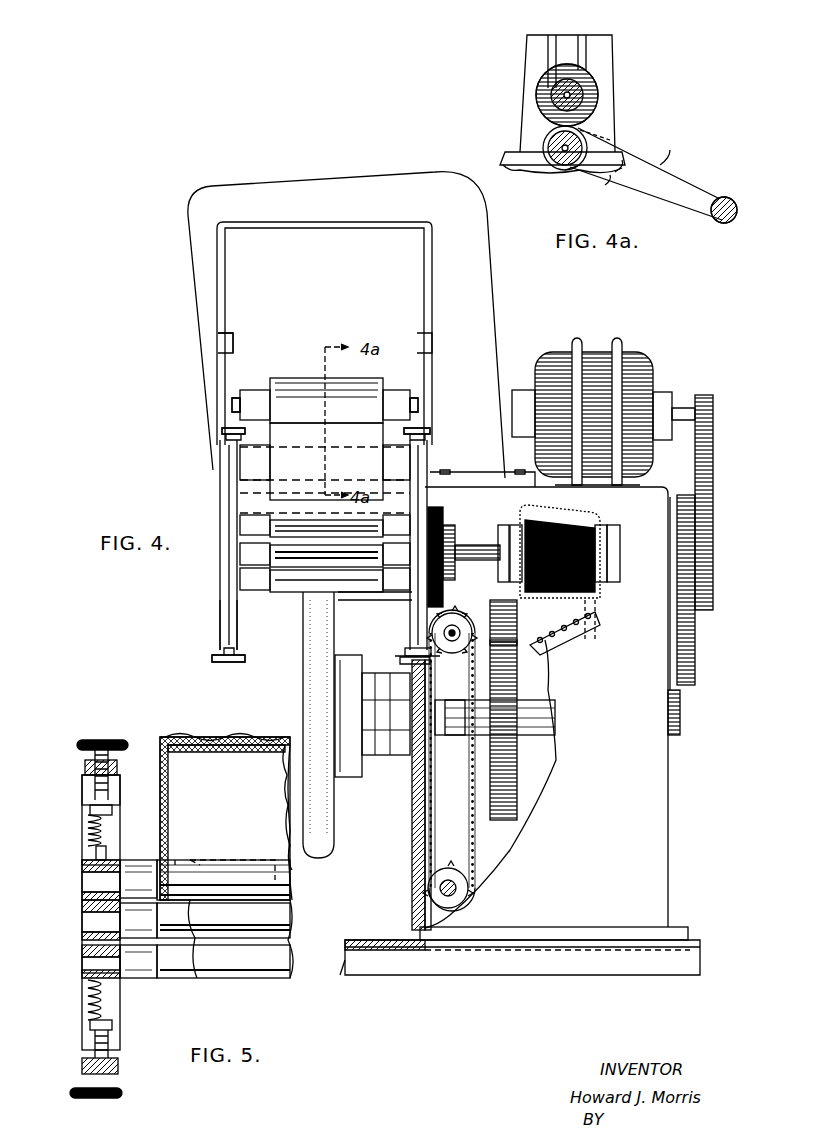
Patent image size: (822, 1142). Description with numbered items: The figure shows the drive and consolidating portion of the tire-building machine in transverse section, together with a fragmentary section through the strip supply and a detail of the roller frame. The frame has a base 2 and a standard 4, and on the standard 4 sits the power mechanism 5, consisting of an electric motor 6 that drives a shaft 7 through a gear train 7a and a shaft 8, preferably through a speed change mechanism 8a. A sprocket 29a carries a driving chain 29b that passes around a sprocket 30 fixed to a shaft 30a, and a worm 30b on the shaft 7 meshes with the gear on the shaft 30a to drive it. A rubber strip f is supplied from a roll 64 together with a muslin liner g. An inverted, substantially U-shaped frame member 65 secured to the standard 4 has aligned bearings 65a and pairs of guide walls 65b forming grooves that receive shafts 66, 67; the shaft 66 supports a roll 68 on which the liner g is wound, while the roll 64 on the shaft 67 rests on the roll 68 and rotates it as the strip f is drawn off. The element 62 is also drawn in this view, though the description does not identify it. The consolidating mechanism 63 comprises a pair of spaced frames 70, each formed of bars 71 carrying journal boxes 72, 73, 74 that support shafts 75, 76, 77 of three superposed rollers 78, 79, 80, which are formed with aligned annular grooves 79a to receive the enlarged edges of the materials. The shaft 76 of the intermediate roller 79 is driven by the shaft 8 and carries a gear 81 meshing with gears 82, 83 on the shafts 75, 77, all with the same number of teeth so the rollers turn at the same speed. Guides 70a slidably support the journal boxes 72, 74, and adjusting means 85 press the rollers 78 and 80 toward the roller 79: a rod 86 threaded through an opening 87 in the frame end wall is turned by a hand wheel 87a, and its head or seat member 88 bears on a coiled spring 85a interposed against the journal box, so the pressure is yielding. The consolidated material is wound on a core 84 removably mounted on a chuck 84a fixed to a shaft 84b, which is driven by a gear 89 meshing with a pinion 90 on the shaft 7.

In FIG. 4, the base 2 is at (467, 975).
In FIG. 4, the standard 4 is at (655, 820).
In FIG. 4, the power mechanism 5 is at (670, 572).
In FIG. 4, the electric motor 6 is at (600, 352).
In FIG. 4, the shaft 7 is at (518, 650).
In FIG. 4, the gear train 7a is at (699, 565).
In FIG. 4, the shaft 8 is at (465, 548).
In FIG. 4, the speed change mechanism 8a is at (470, 892).
In FIG. 4, the sprocket 29a is at (428, 882).
In FIG. 4, the driving chain 29b is at (412, 858).
In FIG. 4, the sprocket 30 is at (455, 650).
In FIG. 4, the shaft 30a is at (418, 640).
In FIG. 4, the worm 30b is at (455, 612).
In FIG. 4, the frame 62 is at (324, 333).
In FIG. 4A, the frame 62 is at (581, 136).
In FIG. 4A, the consolidating mechanism 63 is at (740, 200).
In FIG. 4, the roll 64 is at (400, 395).
In FIG. 4A, the roll 64 is at (585, 90).
In FIG. 4, the frame member 65 is at (490, 296).
In FIG. 4A, the frame member 65 is at (530, 62).
In FIG. 4A, the bearings 65a is at (620, 138).
In FIG. 4, the guide walls 65b is at (230, 348).
In FIG. 4A, the guide walls 65b is at (590, 45).
In FIG. 4A, the shaft 66 is at (545, 142).
In FIG. 4A, the shaft 67 is at (537, 94).
In FIG. 4, the roll 68 is at (420, 425).
In FIG. 4A, the roll 68 is at (558, 163).
In FIG. 4, the frame 70 is at (220, 488).
In FIG. 5, the frame 70 is at (82, 1048).
In FIG. 5, the guides 70a is at (96, 852).
In FIG. 4, the bar 71 is at (220, 622).
In FIG. 5, the bar 71 is at (82, 789).
In FIG. 5, the journal box 72 is at (82, 866).
In FIG. 5, the journal box 73 is at (82, 908).
In FIG. 5, the journal box 74 is at (82, 950).
In FIG. 5, the shaft 75 is at (82, 885).
In FIG. 5, the shaft 76 is at (82, 926).
In FIG. 5, the shaft 77 is at (82, 972).
In FIG. 4, the roller 78 is at (240, 527).
In FIG. 4A, the roller 78 is at (735, 215).
In FIG. 5, the roller 78 is at (133, 860).
In FIG. 4, the roller 79 is at (240, 548).
In FIG. 5, the roller 79 is at (225, 919).
In FIG. 5, the annular grooves 79a is at (160, 862).
In FIG. 4, the roller 80 is at (242, 572).
In FIG. 5, the roller 80 is at (138, 978).
In FIG. 4, the gear 81 is at (450, 522).
In FIG. 4, the gear 82 is at (440, 507).
In FIG. 4, the gear 83 is at (420, 585).
In FIG. 4, the core 84 is at (303, 652).
In FIG. 4, the chuck 84a is at (345, 777).
In FIG. 4, the shaft 84b is at (450, 740).
In FIG. 4, the adjusting means 85 is at (212, 655).
In FIG. 5, the adjusting means 85 is at (80, 780).
In FIG. 5, the coiled spring 85a is at (88, 828).
In FIG. 5, the rod 86 is at (108, 790).
In FIG. 5, the opening 87 is at (117, 768).
In FIG. 4, the hand wheel 87a is at (232, 428).
In FIG. 5, the hand wheel 87a is at (102, 740).
In FIG. 5, the head or seat member 88 is at (90, 808).
In FIG. 4, the gear 89 is at (500, 820).
In FIG. 4, the pinion 90 is at (555, 652).
In FIG. 4, the rubber strip f is at (325, 468).
In FIG. 4A, the rubber strip f is at (670, 156).
In FIG. 5, the rubber strip f is at (226, 805).
In FIG. 4A, the liner g is at (646, 174).
In FIG. 5, the liner g is at (226, 731).